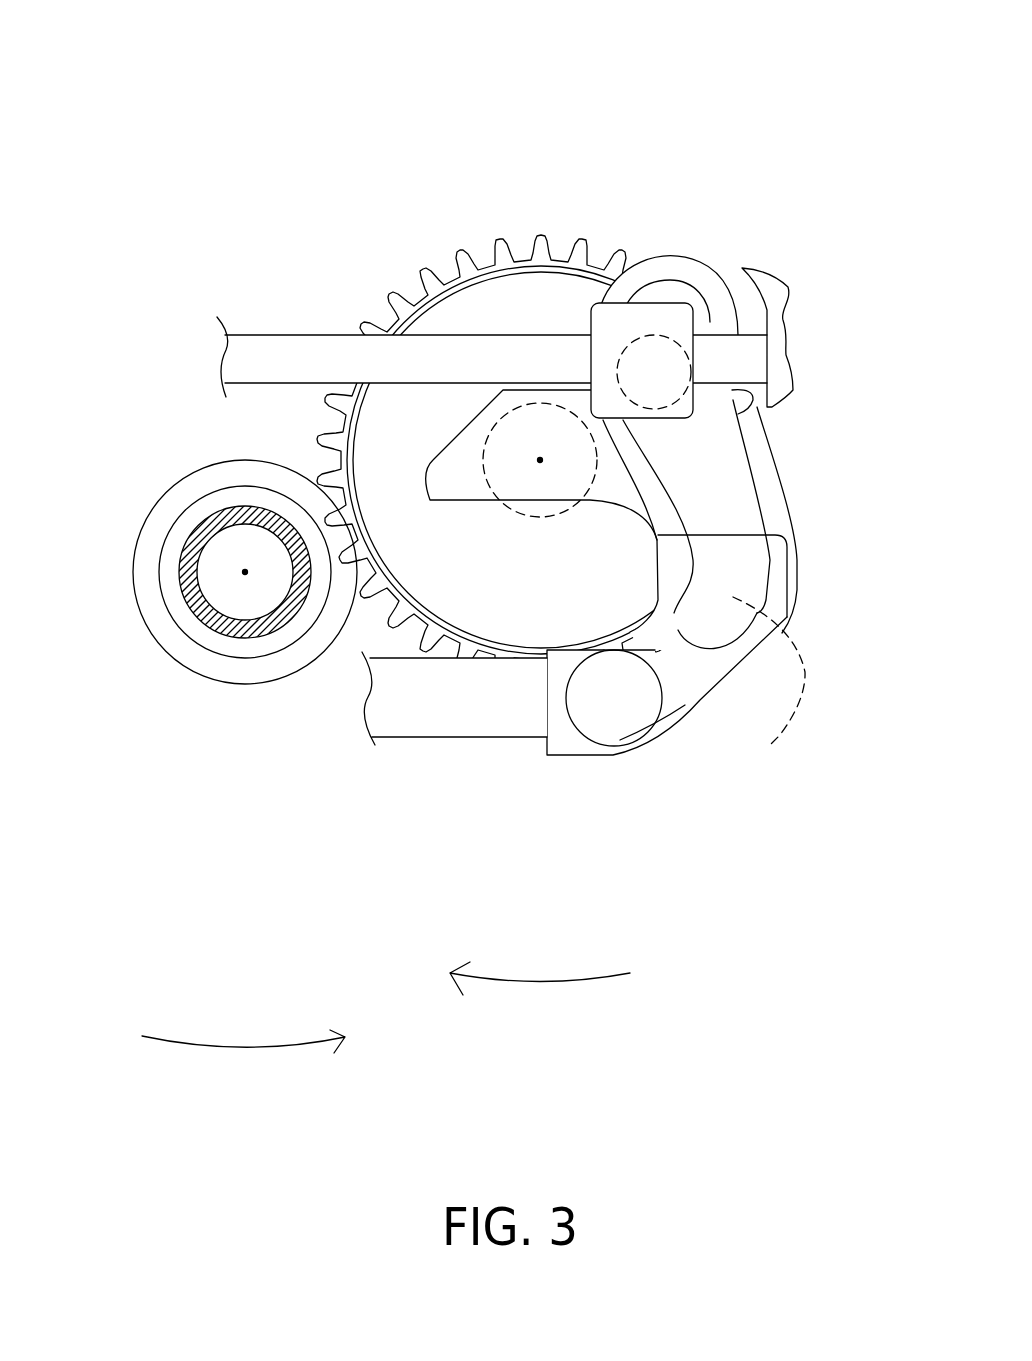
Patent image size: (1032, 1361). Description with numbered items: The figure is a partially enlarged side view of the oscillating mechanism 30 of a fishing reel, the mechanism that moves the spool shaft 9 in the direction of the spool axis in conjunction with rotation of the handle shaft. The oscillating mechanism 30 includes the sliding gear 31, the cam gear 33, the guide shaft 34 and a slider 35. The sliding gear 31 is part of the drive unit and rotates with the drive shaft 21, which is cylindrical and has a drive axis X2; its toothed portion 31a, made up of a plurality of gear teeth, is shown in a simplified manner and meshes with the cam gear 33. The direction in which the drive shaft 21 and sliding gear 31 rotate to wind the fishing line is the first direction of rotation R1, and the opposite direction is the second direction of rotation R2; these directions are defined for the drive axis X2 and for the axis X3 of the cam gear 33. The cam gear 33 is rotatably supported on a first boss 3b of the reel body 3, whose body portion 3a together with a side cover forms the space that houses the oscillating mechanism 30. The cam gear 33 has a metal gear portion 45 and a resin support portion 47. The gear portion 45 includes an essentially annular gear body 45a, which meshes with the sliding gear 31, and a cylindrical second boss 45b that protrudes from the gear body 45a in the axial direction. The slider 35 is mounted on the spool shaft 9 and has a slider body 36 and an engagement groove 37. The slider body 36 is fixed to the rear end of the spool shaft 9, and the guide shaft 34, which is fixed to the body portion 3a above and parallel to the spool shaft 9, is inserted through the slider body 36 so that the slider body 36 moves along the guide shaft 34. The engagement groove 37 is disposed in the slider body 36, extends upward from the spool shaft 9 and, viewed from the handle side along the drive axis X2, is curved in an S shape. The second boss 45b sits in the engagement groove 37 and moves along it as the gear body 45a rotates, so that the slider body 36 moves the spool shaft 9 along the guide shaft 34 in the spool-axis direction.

The oscillating mechanism 30 is at (633, 114).
The cam gear 33 is at (480, 58).
The support portion 47 is at (435, 317).
The gear portion 45 is at (530, 116).
The gear body 45a is at (486, 273).
The second boss 45b is at (660, 363).
The guide shaft 34 is at (278, 355).
The spool shaft 9 is at (457, 705).
The reel body 3 is at (660, 405).
The body portion 3a is at (775, 295).
The first boss 3b is at (533, 510).
The slider 35 is at (770, 915).
The slider body 36 is at (688, 687).
The engagement groove 37 is at (770, 745).
The sliding gear 31 is at (107, 567).
The toothed portion 31a is at (153, 530).
The drive shaft 21 is at (193, 613).
The drive axis X2 is at (245, 573).
The axis X3 is at (540, 460).
The first direction of rotation R1 is at (243, 1060).
The second direction of rotation R2 is at (540, 994).